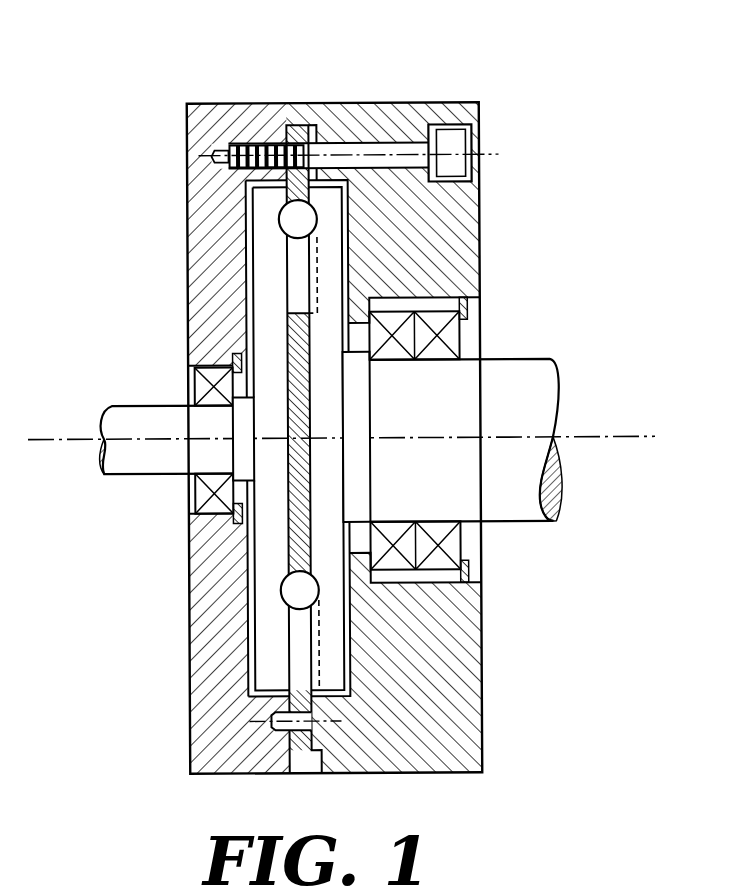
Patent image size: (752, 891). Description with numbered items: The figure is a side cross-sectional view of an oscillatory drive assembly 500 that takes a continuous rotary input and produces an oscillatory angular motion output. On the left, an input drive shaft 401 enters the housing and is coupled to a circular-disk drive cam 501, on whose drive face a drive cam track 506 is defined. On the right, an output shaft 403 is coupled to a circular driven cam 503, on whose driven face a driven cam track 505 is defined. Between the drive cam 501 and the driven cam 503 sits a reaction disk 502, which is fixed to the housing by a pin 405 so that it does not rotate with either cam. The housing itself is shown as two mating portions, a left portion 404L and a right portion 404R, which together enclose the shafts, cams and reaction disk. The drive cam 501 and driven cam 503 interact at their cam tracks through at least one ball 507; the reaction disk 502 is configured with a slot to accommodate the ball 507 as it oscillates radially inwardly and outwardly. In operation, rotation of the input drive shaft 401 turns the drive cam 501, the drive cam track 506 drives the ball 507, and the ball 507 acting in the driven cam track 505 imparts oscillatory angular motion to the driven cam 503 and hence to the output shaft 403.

The assembly 500 is at (318, 90).
The reaction disk 502 is at (288, 128).
The drive cam track 506 is at (282, 213).
The driven cam track 505 is at (325, 272).
The right housing portion 404R is at (486, 272).
The drive cam 501 is at (270, 313).
The left housing portion 404L is at (178, 350).
The input drive shaft 401 is at (168, 410).
The output shaft 403 is at (556, 512).
The ball 507 is at (292, 598).
The driven cam 503 is at (330, 562).
The pin 405 is at (272, 722).